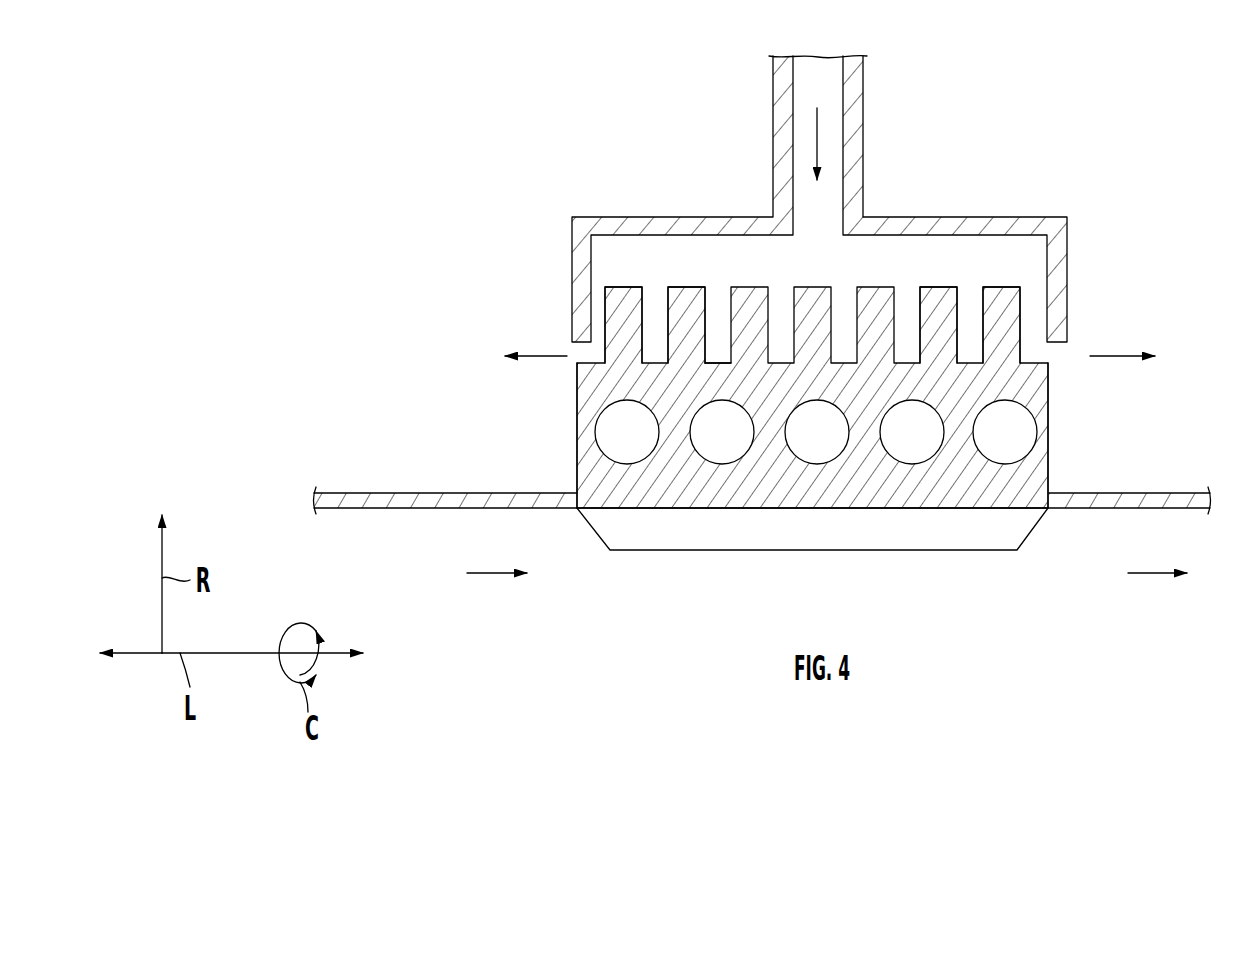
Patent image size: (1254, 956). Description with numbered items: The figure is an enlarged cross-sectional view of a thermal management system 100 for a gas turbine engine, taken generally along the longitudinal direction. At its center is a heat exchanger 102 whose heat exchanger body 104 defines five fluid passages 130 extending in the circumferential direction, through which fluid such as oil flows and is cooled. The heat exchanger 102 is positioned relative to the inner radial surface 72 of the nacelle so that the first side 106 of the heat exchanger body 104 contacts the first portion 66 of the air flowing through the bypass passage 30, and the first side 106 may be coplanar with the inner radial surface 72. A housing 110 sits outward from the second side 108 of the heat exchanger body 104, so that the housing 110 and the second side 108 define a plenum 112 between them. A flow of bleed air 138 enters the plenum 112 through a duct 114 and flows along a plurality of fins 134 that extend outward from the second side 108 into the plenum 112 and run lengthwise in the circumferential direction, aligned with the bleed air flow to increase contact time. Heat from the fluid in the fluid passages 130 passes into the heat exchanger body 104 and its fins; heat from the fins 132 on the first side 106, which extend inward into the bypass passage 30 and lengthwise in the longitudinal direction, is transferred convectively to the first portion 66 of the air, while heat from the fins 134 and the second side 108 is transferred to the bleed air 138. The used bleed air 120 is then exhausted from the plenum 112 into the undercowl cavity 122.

The thermal management system 100 is at (483, 95).
The heat exchanger 102 is at (540, 480).
The heat exchanger body 104 is at (1049, 470).
The first side 106 is at (938, 508).
The second side 108 is at (720, 363).
The housing 110 is at (1022, 217).
The plenum 112 is at (836, 275).
The duct 114 is at (773, 138).
The used bleed air 120 is at (538, 356).
The undercowl cavity 122 is at (540, 435).
The fluid passages 130 is at (610, 447).
The fins 132 is at (675, 550).
The fins 134 is at (688, 287).
The bleed air 138 is at (818, 132).
The bypass passage 30 is at (797, 605).
The first portion of the air 66 is at (485, 573).
The inner radial surface 72 is at (378, 508).